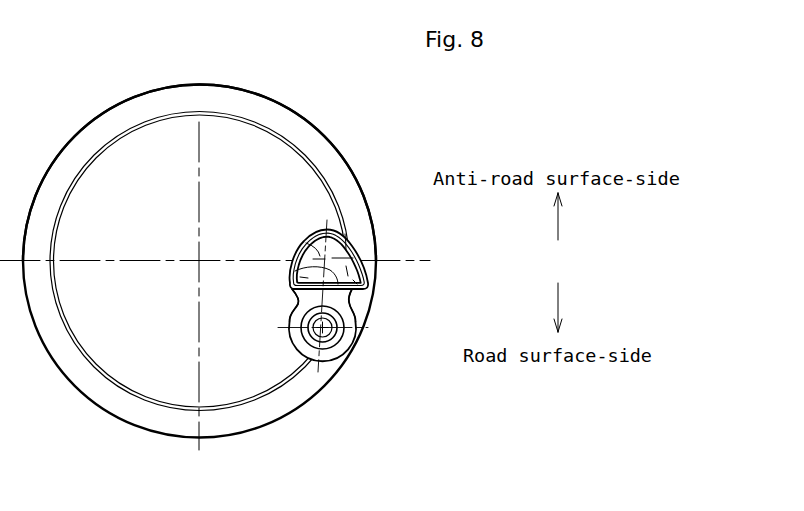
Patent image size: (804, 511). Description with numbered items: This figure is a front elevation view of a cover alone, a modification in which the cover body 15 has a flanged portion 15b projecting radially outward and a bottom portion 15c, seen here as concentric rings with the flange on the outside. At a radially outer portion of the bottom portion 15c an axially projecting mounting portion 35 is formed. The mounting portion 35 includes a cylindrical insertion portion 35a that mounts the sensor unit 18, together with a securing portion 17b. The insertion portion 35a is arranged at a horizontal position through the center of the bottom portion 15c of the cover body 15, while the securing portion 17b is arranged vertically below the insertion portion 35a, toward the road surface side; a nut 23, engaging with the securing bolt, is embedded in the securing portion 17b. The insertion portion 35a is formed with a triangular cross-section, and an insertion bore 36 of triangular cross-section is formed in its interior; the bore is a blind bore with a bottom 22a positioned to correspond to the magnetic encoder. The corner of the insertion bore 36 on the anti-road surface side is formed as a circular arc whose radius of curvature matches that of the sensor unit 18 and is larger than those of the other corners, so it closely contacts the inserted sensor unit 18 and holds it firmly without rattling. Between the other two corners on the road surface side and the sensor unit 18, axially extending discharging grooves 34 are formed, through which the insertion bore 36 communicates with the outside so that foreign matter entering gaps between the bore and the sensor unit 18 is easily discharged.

The cover body 15 is at (296, 107).
The flanged portion 15b is at (97, 130).
The bottom portion 15c is at (158, 378).
The securing portion 17b is at (298, 338).
The sensor unit 18 is at (365, 246).
The bottom of insertion bore 22a is at (308, 235).
The nut 23 is at (338, 342).
The discharging grooves 34 is at (293, 295).
The mounting portion 35 is at (350, 234).
The insertion portion 35a is at (292, 253).
The insertion bore 36 is at (290, 275).